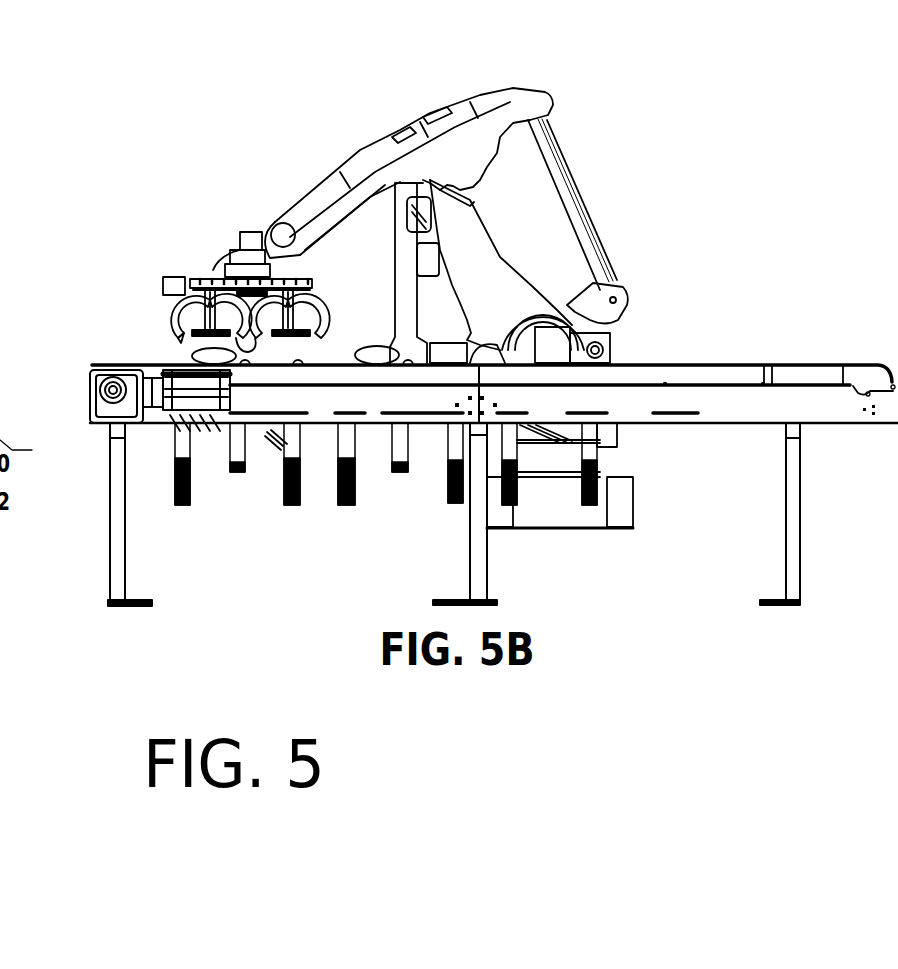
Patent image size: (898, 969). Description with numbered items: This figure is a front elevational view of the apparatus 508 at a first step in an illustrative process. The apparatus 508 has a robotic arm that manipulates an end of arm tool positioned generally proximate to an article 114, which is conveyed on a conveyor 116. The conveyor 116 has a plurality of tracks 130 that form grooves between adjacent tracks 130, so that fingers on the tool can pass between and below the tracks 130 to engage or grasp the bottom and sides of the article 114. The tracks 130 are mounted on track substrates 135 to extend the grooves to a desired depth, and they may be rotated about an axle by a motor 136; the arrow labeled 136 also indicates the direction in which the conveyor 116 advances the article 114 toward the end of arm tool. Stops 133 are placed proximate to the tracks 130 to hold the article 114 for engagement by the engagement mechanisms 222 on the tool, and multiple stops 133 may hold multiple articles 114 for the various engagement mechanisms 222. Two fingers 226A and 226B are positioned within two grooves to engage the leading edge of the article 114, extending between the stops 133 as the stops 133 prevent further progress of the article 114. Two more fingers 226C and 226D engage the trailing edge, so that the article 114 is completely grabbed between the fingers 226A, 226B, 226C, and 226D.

The apparatus 508 is at (473, 69).
The engagement mechanism 222 is at (150, 318).
The finger 226A is at (182, 337).
The finger 226B is at (175, 322).
The finger 226C is at (271, 348).
The finger 226D is at (227, 307).
The article 114 is at (377, 346).
The stop 133 is at (193, 356).
The track 130 is at (764, 364).
The track substrate 135 is at (618, 377).
The motor 136 is at (100, 423).
The conveyor 116 is at (703, 348).